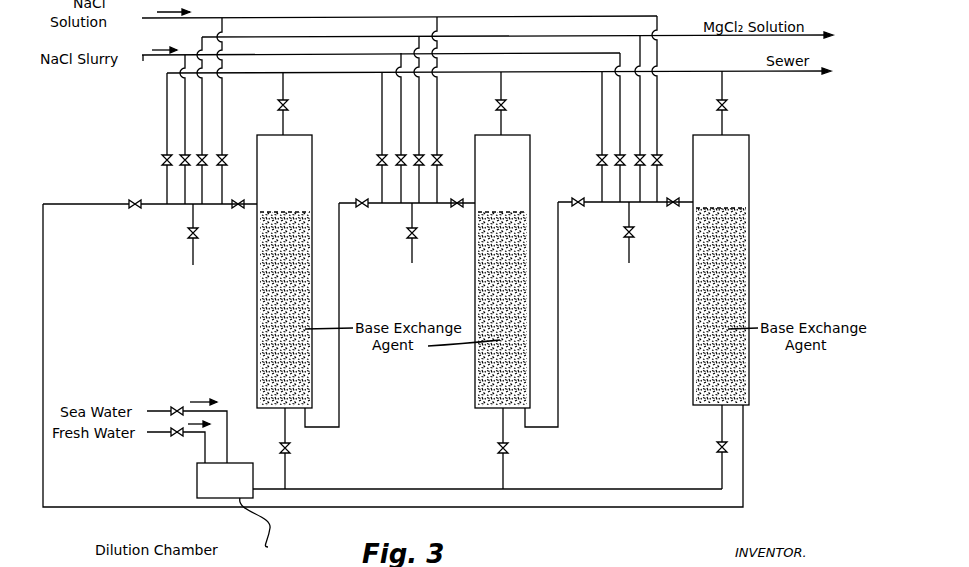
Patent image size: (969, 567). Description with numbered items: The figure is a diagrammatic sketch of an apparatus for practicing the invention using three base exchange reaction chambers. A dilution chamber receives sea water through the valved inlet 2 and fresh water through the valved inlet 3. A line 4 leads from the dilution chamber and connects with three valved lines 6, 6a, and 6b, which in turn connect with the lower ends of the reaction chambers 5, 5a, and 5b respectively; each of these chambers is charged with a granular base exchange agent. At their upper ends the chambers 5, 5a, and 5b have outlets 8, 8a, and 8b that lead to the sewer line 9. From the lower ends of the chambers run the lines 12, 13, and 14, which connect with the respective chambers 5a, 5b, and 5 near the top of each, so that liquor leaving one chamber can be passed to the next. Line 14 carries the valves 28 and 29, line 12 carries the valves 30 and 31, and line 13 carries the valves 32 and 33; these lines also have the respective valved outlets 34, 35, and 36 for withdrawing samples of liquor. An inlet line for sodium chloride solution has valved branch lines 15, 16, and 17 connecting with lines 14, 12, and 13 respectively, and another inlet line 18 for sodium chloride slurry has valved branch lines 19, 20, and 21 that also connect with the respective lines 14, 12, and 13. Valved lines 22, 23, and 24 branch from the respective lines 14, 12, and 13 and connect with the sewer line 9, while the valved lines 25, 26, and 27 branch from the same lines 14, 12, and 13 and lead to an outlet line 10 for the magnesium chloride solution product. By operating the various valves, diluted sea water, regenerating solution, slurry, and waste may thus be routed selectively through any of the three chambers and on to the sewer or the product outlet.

The valved sea water inlet 2 is at (160, 411).
The valved fresh water inlet 3 is at (147, 433).
The line 4 is at (273, 497).
The reaction chamber 5 is at (257, 278).
The reaction chamber 5a is at (530, 315).
The reaction chamber 5b is at (750, 273).
The valved line 6 is at (285, 470).
The valved line 6a is at (505, 470).
The valved line 6b is at (722, 472).
The outlet 8 is at (269, 240).
The outlet 8a is at (534, 240).
The outlet 8b is at (740, 238).
The sewer line 9 is at (308, 73).
The outlet line 10 is at (248, 37).
The line 12 is at (339, 385).
The line 13 is at (558, 350).
The line 14 is at (43, 325).
The valved branch line 15 is at (224, 93).
The valved branch line 16 is at (439, 99).
The valved branch line 17 is at (659, 97).
The inlet line 18 is at (287, 54).
The valved branch line 19 is at (185, 122).
The valved branch line 20 is at (401, 104).
The valved branch line 21 is at (620, 103).
The valved line 22 is at (165, 100).
The valved line 23 is at (382, 90).
The valved line 24 is at (602, 90).
The valved line 25 is at (202, 135).
The valved line 26 is at (419, 118).
The valved line 27 is at (640, 120).
The valve 28 is at (135, 207).
The valve 29 is at (238, 207).
The valve 30 is at (365, 207).
The valve 31 is at (457, 207).
The valve 32 is at (580, 206).
The valve 33 is at (673, 206).
The valved outlet 34 is at (193, 256).
The valved outlet 35 is at (412, 251).
The valved outlet 36 is at (629, 250).